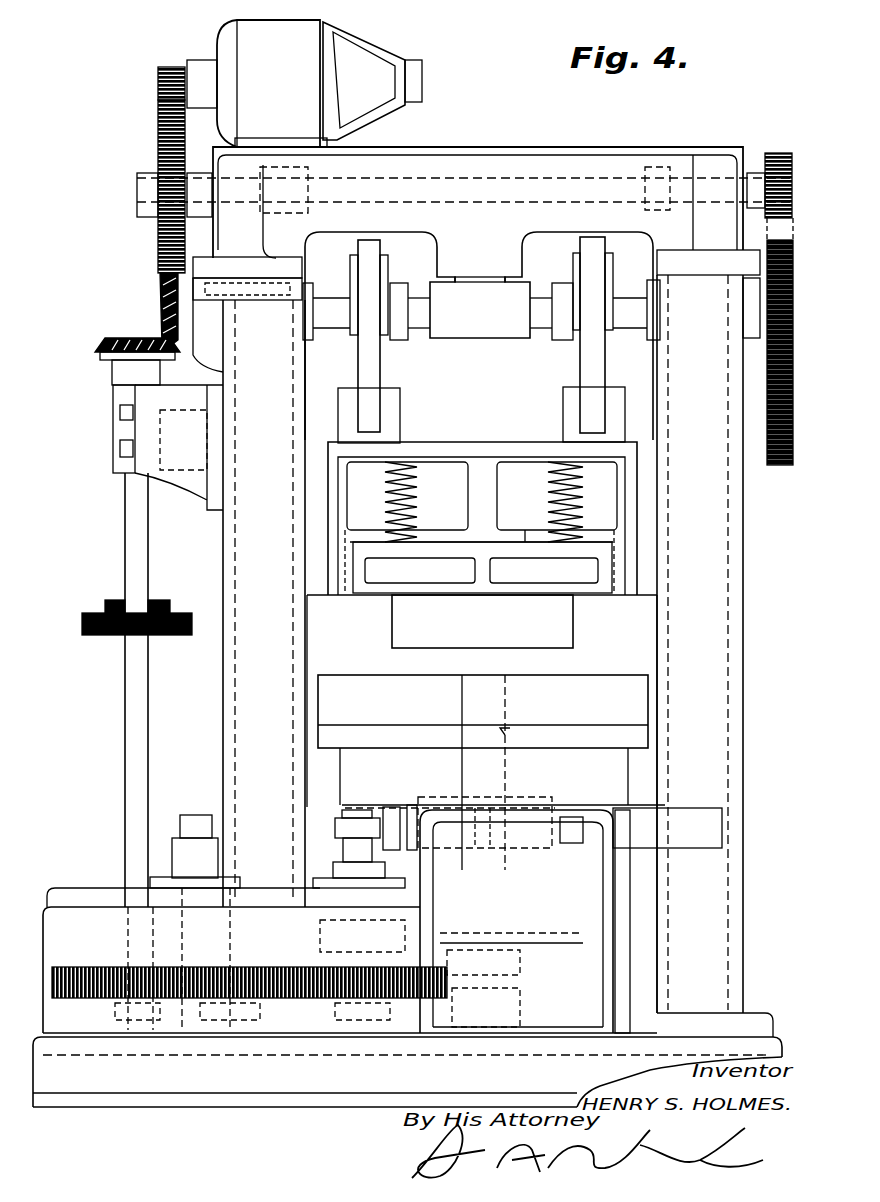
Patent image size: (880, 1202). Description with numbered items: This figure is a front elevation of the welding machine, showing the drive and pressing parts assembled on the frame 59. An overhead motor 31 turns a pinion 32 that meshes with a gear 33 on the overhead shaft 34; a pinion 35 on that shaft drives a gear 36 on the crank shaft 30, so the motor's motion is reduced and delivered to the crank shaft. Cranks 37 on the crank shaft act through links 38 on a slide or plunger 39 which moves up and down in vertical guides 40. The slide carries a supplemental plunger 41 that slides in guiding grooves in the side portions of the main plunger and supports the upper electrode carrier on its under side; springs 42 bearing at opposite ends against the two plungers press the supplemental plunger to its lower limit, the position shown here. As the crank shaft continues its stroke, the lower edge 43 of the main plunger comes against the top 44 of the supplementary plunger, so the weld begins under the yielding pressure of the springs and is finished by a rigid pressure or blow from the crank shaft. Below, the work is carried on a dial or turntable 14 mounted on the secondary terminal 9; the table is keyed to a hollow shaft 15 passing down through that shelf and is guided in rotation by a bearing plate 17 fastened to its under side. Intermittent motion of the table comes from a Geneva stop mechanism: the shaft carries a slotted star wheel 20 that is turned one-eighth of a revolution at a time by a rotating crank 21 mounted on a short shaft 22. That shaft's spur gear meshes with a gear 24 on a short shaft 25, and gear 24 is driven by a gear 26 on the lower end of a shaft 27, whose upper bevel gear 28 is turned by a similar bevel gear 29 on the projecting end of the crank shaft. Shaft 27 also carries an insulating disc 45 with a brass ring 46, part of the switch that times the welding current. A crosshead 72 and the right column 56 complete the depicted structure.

The pole 9 is at (486, 804).
The dial or turntable 14 is at (483, 772).
The hollow shaft 15 is at (505, 782).
The bearing plate 17 is at (483, 737).
The slotted star wheel 20 is at (522, 928).
The rotating crank 21 is at (440, 910).
The short shaft 22 is at (362, 850).
The gear 24 is at (265, 1000).
The short shaft 25 is at (210, 945).
The gear 26 is at (85, 1000).
The shaft 27 is at (150, 845).
The bevel gear 28 is at (108, 340).
The bevel gear 29 is at (158, 310).
The crank shaft 30 is at (338, 315).
The overhead motor 31 is at (304, 83).
The pinion 32 is at (162, 68).
The gear 33 is at (158, 133).
The overhead shaft 34 is at (450, 173).
The pinion 35 is at (772, 153).
The gear 36 is at (775, 468).
The crank 37 is at (608, 268).
The link 38 is at (600, 372).
The slide or plunger 39 is at (625, 508).
The vertical guides 40 is at (645, 466).
The supplemental plunger 41 is at (607, 567).
The spring 42 is at (548, 496).
The lower edge 43 is at (525, 532).
The top 44 is at (522, 545).
The disc 45 is at (86, 633).
The brass ring 46 is at (165, 600).
The right column 56 is at (715, 656).
The frame 59 is at (249, 582).
The crosshead 72 is at (482, 621).